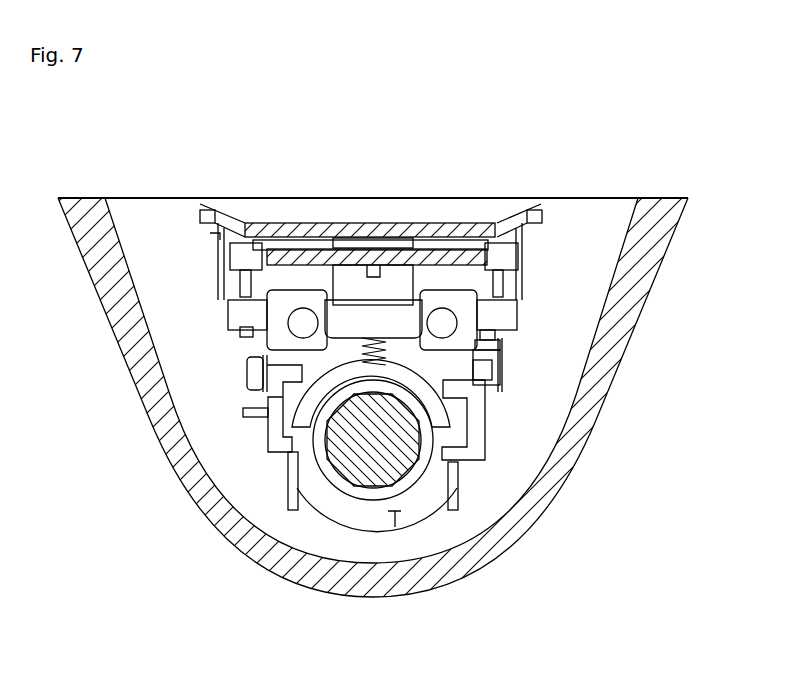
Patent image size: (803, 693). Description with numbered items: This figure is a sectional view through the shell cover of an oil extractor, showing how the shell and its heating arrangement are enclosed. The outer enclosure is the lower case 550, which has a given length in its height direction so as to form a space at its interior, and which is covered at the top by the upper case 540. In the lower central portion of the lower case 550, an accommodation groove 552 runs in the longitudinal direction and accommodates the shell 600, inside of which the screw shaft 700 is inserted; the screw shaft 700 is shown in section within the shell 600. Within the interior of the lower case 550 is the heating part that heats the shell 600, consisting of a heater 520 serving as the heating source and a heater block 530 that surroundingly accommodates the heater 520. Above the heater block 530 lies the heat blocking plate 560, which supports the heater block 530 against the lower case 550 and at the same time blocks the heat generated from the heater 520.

The heater 520 is at (450, 322).
The heater block 530 is at (440, 357).
The upper case 540 is at (347, 198).
The lower case 550 is at (558, 494).
The accommodation groove 552 is at (397, 515).
The heat blocking plate 560 is at (428, 245).
The shell 600 is at (330, 490).
The screw shaft 700 is at (377, 463).